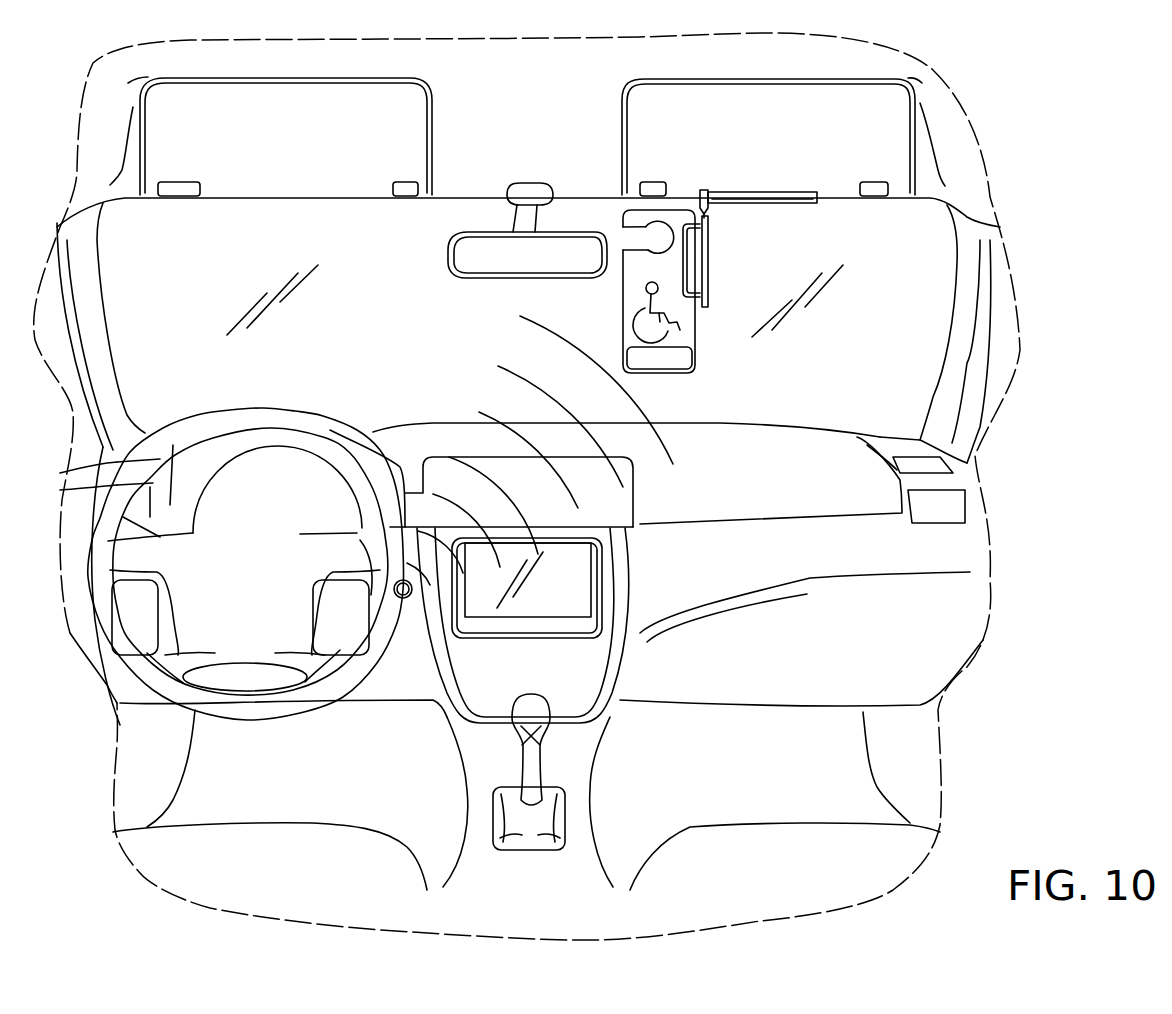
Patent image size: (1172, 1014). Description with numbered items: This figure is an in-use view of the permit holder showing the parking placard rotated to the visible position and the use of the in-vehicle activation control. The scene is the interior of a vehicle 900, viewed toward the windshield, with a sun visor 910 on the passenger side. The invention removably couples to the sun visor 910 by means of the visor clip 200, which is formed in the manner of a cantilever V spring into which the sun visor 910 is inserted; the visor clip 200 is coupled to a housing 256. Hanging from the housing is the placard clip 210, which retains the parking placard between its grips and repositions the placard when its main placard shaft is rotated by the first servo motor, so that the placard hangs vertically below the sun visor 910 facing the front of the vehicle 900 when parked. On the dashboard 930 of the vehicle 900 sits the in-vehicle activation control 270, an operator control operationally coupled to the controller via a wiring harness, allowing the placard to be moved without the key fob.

The vehicle 900 is at (963, 547).
The sun visor 910 is at (890, 120).
The visor clip 200 is at (835, 158).
The housing 256 is at (703, 190).
The placard clip 210 is at (710, 260).
The dashboard 930 is at (410, 447).
The in-vehicle activation control 270 is at (405, 599).